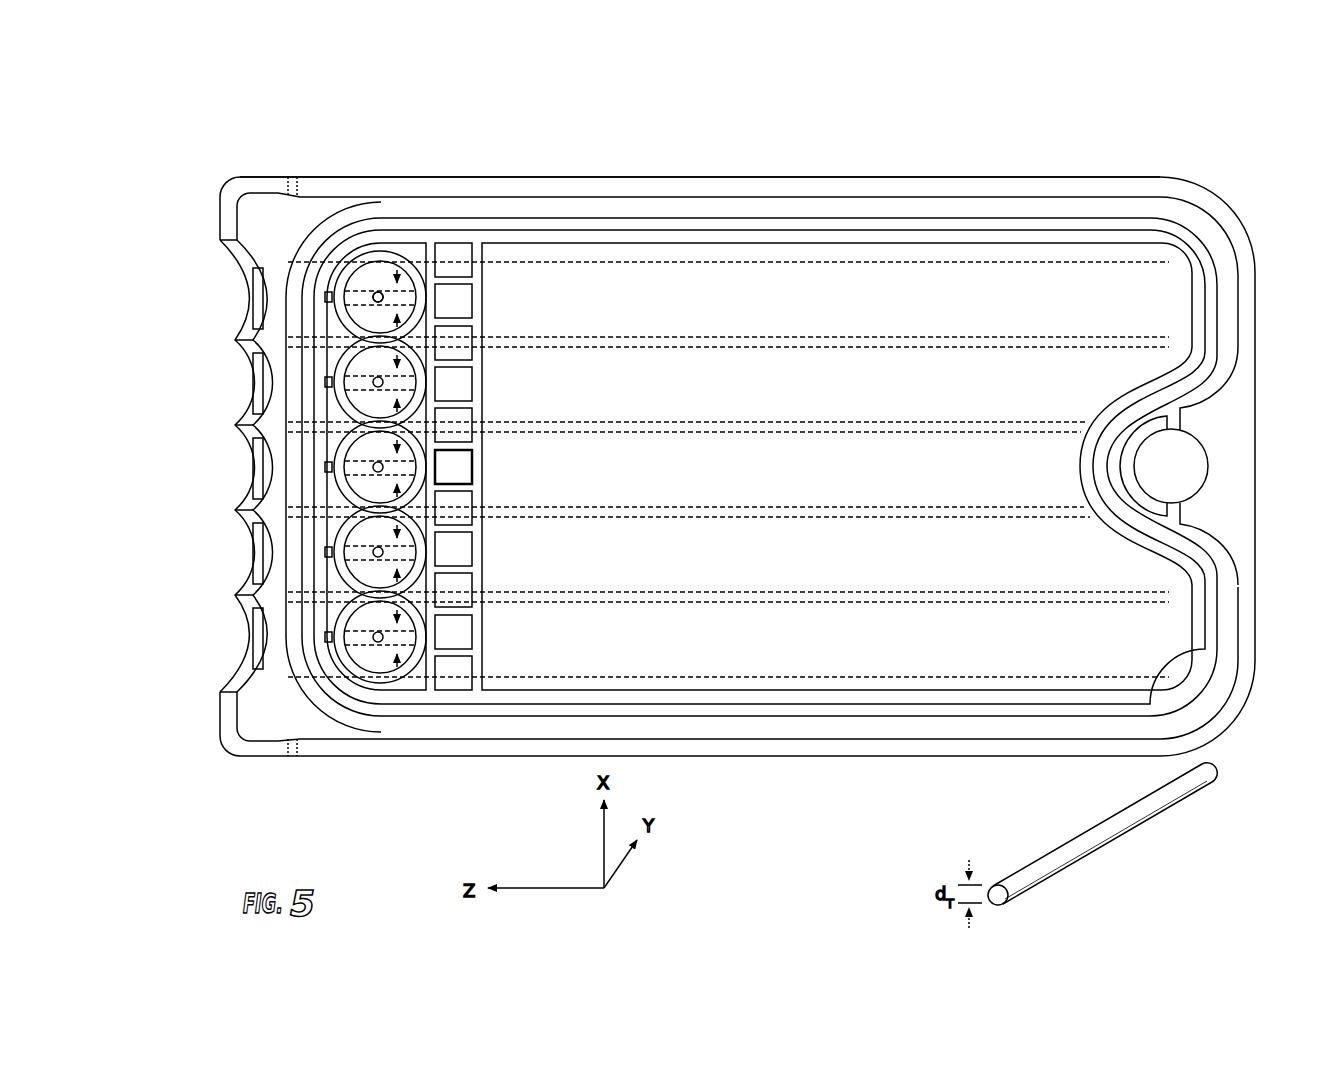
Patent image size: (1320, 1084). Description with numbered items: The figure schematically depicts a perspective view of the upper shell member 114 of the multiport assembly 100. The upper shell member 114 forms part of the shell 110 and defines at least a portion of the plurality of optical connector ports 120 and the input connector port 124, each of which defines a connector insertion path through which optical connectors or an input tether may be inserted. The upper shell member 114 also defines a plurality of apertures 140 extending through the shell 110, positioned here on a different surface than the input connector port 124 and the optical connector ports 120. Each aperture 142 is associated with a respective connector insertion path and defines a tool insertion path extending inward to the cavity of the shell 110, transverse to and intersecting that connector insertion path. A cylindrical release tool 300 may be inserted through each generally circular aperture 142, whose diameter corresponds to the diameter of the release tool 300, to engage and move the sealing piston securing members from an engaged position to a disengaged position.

The multiport assembly 100 is at (983, 139).
The shell 110 is at (1086, 160).
The upper shell member 114 is at (809, 170).
The plurality of optical connector ports 120 is at (193, 243).
The input connector port 124 is at (212, 653).
The plurality of apertures 140 is at (383, 280).
The aperture 142 is at (375, 290).
The release tool 300 is at (1113, 863).